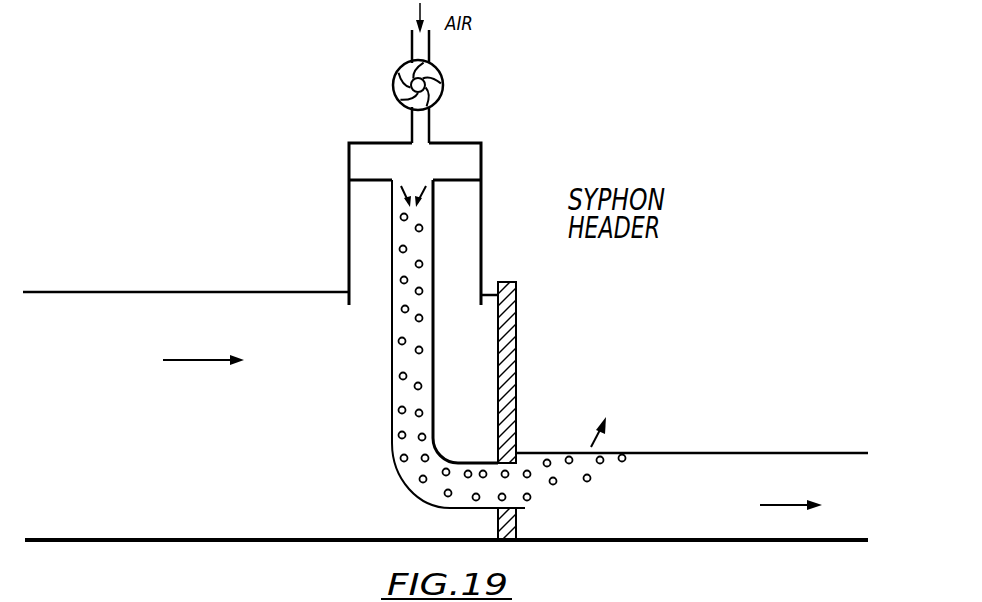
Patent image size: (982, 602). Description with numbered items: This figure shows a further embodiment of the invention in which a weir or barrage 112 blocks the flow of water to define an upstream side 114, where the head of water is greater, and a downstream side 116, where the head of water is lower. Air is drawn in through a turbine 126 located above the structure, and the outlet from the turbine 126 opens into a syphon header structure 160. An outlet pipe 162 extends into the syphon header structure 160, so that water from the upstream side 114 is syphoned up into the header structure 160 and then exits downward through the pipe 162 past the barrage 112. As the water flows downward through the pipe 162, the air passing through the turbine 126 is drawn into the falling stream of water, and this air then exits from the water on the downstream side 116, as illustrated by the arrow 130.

The turbine 126 is at (397, 73).
The syphon header structure 160 is at (367, 143).
The upstream side 114 is at (148, 311).
The outlet pipe 162 is at (392, 392).
The weir or barrage 112 is at (517, 353).
The arrow 130 is at (600, 442).
The downstream side 116 is at (712, 466).